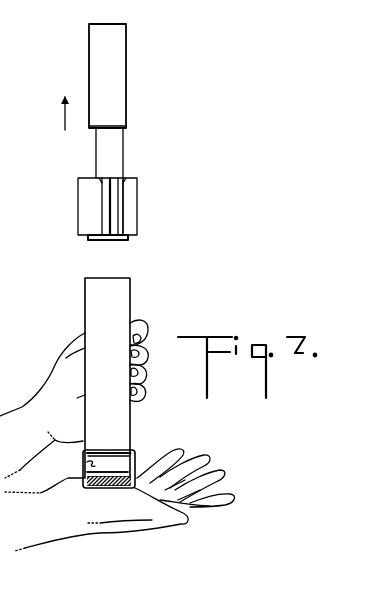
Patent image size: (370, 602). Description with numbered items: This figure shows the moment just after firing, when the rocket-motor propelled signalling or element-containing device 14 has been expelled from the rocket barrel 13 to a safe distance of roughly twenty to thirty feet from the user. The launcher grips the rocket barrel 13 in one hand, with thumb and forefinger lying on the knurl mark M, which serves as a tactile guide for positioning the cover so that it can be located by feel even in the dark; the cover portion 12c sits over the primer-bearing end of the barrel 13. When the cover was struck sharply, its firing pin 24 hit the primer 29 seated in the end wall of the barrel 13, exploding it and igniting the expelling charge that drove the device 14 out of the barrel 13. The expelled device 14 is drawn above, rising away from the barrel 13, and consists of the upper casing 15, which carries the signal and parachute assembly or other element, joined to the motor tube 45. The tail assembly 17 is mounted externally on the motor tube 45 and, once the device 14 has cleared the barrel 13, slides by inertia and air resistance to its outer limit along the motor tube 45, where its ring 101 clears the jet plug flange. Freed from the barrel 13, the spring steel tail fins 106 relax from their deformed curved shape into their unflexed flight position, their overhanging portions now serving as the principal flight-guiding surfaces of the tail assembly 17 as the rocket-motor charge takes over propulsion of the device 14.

The upper casing 15 is at (118, 62).
The rocket-motor propelled signalling or element-containing device 14 is at (133, 100).
The motor tube 45 is at (112, 153).
The tail assembly 17 is at (131, 200).
The tail fins 106 is at (130, 222).
The ring 101 is at (128, 238).
The first inner casing 13 is at (118, 300).
The knurl mark M is at (113, 453).
The primer 29 is at (121, 468).
The firing pin 24 is at (128, 477).
The cap 12c is at (85, 467).